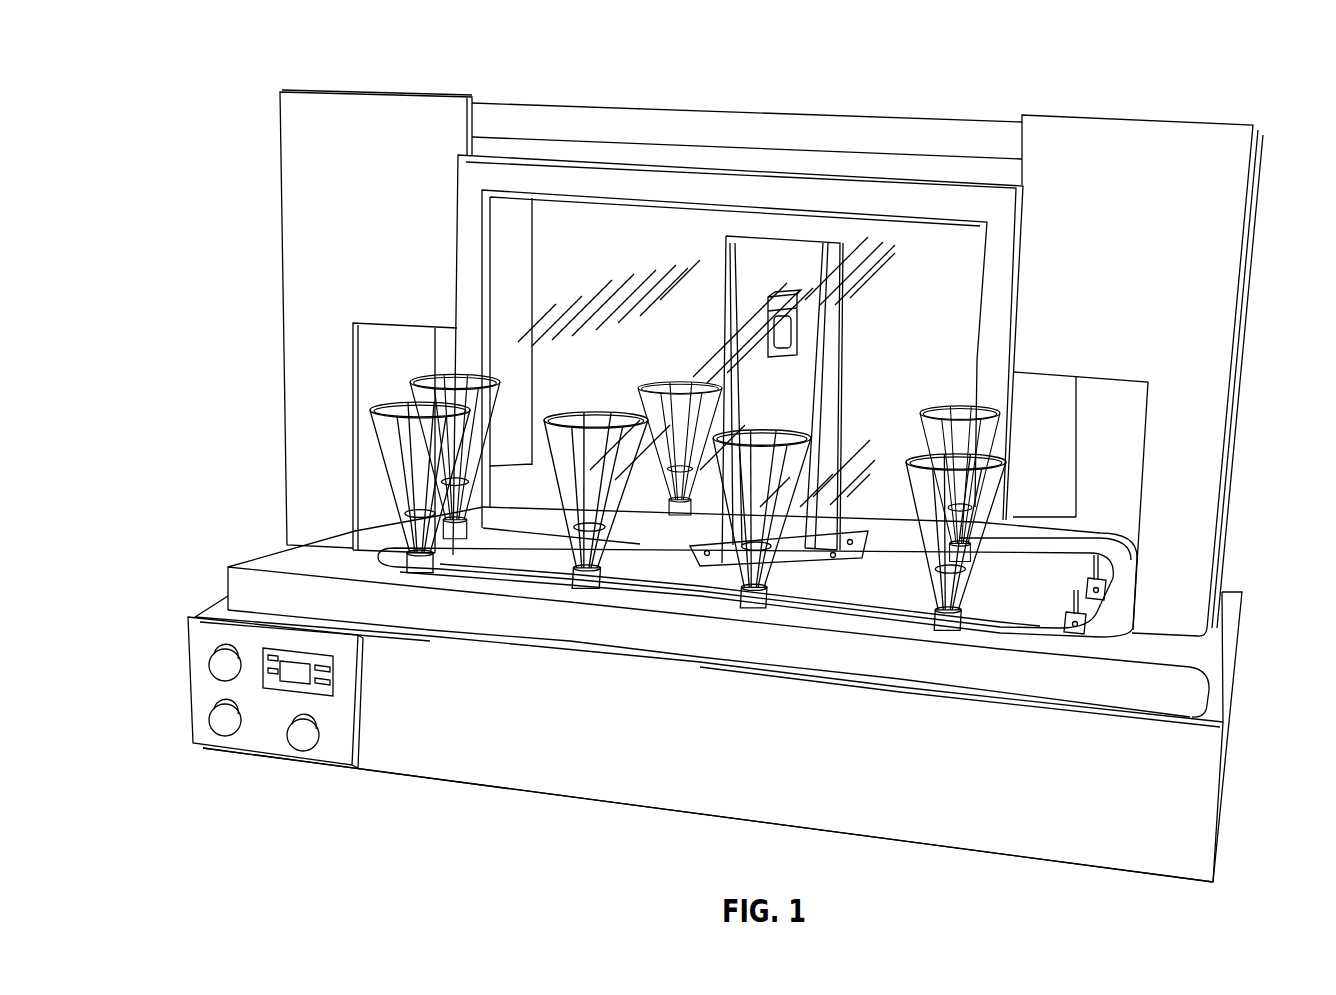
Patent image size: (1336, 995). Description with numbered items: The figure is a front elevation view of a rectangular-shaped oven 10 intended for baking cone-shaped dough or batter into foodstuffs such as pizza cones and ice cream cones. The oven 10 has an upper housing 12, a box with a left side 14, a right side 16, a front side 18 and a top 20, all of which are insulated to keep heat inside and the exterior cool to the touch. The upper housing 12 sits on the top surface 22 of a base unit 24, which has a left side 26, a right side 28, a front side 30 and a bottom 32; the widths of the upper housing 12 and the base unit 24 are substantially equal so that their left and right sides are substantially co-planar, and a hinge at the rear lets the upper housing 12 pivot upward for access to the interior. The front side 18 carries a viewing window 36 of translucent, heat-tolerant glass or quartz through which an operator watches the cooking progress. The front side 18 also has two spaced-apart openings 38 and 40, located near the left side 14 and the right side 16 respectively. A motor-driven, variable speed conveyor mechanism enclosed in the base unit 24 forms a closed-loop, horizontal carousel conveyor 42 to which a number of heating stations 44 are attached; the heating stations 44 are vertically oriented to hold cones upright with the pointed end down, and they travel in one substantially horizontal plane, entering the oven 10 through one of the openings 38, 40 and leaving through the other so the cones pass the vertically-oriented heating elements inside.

The oven 10 is at (197, 84).
The upper housing 12 is at (253, 224).
The left side 14 is at (285, 332).
The right side 16 is at (1238, 432).
The front side 18 is at (322, 391).
The top 20 is at (1186, 112).
The top surface 22 is at (258, 565).
The base unit 24 is at (188, 650).
The left side 26 is at (180, 697).
The right side 28 is at (1230, 770).
The front side 30 is at (715, 740).
The bottom 32 is at (1176, 888).
The viewing window 36 is at (929, 327).
The opening 38 is at (397, 322).
The opening 40 is at (1118, 374).
The carousel conveyor 42 is at (1098, 631).
The heating stations 44 is at (387, 470).